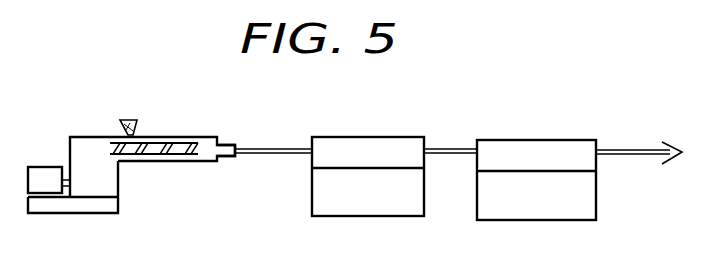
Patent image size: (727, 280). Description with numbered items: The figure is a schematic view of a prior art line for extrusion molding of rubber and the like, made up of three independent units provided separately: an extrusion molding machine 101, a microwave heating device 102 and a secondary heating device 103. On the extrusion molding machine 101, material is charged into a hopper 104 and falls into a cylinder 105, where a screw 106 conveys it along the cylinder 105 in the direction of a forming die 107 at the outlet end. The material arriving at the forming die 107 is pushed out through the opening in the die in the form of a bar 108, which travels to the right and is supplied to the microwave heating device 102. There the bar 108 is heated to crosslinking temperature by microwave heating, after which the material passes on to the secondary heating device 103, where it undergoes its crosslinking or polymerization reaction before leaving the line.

The extrusion molding machine 101 is at (174, 134).
The microwave heating device 102 is at (327, 164).
The secondary heating device 103 is at (505, 205).
The hopper 104 is at (131, 120).
The cylinder 105 is at (187, 160).
The screw 106 is at (154, 155).
The forming die 107 is at (232, 142).
The bar 108 is at (261, 153).